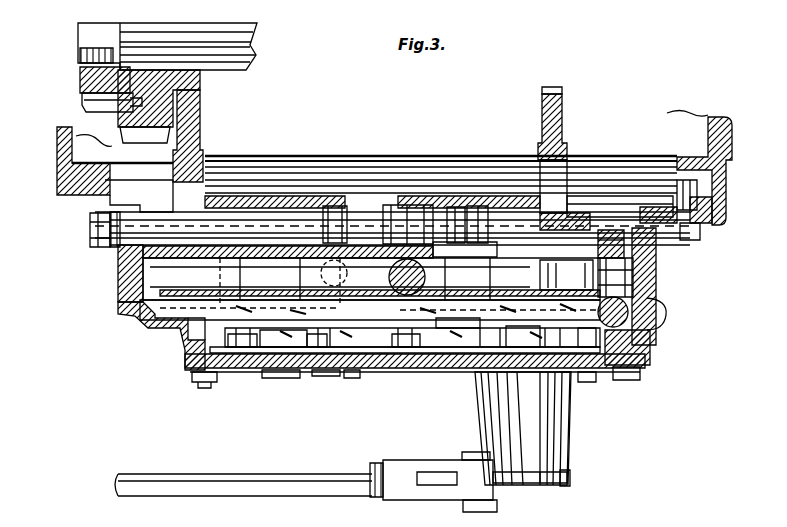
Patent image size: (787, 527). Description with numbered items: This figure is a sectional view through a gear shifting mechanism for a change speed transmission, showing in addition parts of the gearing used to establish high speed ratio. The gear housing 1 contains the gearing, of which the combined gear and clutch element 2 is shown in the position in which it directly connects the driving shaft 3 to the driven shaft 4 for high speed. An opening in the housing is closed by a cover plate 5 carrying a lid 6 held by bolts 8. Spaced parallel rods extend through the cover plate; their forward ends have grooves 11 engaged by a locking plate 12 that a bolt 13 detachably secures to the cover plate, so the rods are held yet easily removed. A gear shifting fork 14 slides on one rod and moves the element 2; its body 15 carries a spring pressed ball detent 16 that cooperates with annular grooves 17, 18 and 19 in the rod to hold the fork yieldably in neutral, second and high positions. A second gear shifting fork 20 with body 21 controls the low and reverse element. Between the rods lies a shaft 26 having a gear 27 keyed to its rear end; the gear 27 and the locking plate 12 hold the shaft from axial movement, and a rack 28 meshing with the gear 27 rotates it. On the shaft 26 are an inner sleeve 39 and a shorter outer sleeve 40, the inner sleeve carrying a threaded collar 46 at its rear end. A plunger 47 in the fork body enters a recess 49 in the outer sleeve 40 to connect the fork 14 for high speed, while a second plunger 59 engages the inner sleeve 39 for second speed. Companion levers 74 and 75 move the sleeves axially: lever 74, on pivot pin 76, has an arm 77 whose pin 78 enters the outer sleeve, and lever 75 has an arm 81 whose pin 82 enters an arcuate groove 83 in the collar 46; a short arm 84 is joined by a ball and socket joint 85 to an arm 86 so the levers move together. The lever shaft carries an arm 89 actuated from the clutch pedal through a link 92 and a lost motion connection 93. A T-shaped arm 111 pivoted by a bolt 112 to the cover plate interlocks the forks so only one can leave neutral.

The gear housing 1 is at (58, 156).
The combined gear and clutch element 2 is at (186, 112).
The driving shaft 3 is at (82, 80).
The driven shaft 4 is at (232, 50).
The cover plate 5 is at (162, 322).
The lid 6 is at (652, 355).
The bolts 8 is at (204, 386).
The grooves 11 is at (112, 252).
The locking plate 12 is at (114, 282).
The bolt 13 is at (90, 236).
The gear shifting fork 14 is at (200, 143).
The body of the shifting fork 15 is at (340, 208).
The spring pressed ball detent 16 is at (300, 370).
The annular groove 17 is at (325, 210).
The annular groove 18 is at (398, 210).
The annular groove 19 is at (458, 208).
The gear shifting fork 20 is at (556, 108).
The body of the shifting fork 21 is at (354, 330).
The shaft 26 is at (150, 318).
The gear 27 is at (606, 236).
The rack 28 is at (588, 354).
The inner sleeve 39 is at (504, 203).
The outer sleeve 40 is at (182, 332).
The collar 46 is at (548, 212).
The plunger 47 is at (232, 290).
The recess 49 is at (220, 274).
The second plunger 59 is at (430, 315).
The companion lever 74 is at (318, 370).
The companion lever 75 is at (446, 348).
The pivot pin 76 is at (328, 378).
The arm 77 is at (262, 370).
The pin 78 is at (278, 372).
The arm 81 is at (569, 374).
The pin 82 is at (590, 284).
The arcuate groove 83 is at (523, 336).
The short arm 84 is at (482, 350).
The ball and socket joint 85 is at (410, 358).
The arm 86 is at (350, 370).
The arm 89 is at (566, 485).
The link 92 is at (298, 474).
The lost motion connection 93 is at (456, 456).
The T-shaped arm 111 is at (586, 198).
The bolt 112 is at (714, 226).